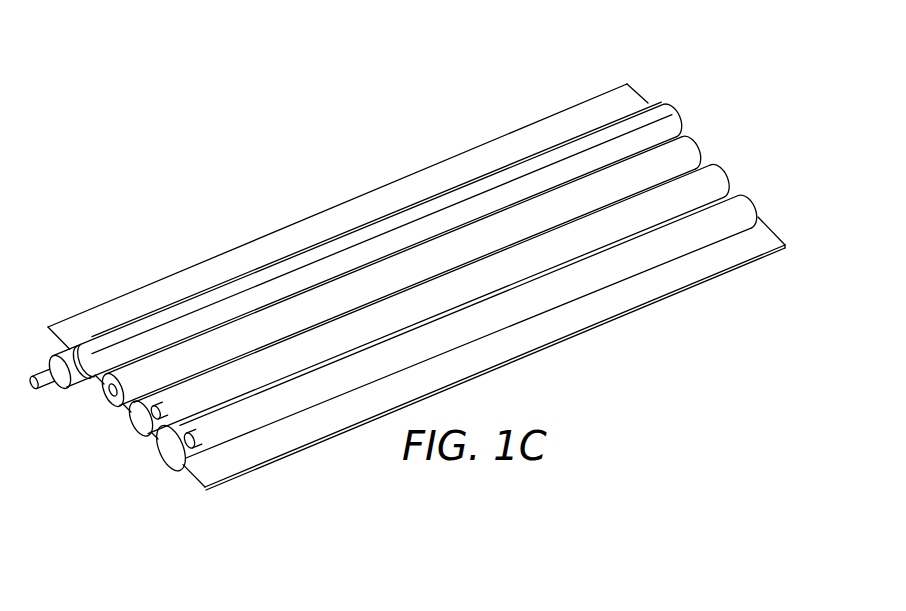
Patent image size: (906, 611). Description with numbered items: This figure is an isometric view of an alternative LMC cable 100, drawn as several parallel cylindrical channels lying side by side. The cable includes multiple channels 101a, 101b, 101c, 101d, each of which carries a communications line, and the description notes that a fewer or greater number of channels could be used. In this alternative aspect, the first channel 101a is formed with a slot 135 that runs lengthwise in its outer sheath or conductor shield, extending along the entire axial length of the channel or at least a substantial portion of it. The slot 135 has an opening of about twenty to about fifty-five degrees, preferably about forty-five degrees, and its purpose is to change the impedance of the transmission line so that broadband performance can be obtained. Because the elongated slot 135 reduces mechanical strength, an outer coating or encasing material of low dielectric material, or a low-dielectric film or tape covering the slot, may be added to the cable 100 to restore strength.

The LMC cable 100 is at (270, 171).
The slot 135 is at (148, 327).
The first channel 101a is at (657, 102).
The channel 101b is at (692, 141).
The channel 101c is at (727, 171).
The channel 101d is at (755, 198).